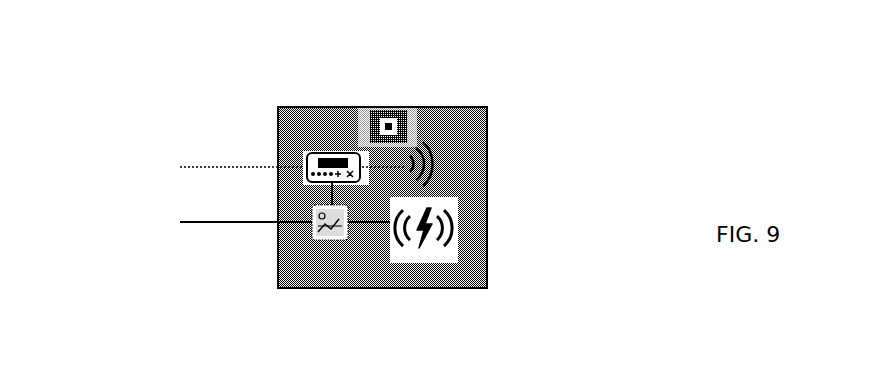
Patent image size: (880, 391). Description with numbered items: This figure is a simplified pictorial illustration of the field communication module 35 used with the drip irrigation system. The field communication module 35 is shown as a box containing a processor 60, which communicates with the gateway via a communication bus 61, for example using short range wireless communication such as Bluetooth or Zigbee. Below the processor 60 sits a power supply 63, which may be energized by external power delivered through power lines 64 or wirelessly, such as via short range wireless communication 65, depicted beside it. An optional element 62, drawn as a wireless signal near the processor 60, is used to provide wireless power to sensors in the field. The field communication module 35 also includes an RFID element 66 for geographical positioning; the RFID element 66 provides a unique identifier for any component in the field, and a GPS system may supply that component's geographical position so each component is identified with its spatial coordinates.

The field communication module 35 is at (512, 182).
The processor 60 is at (332, 150).
The communication bus 61 is at (212, 167).
The wireless power element 62 is at (437, 155).
The power supply 63 is at (325, 243).
The power lines 64 is at (227, 222).
The short range wireless communication 65 is at (457, 225).
The RFID element 66 is at (403, 127).